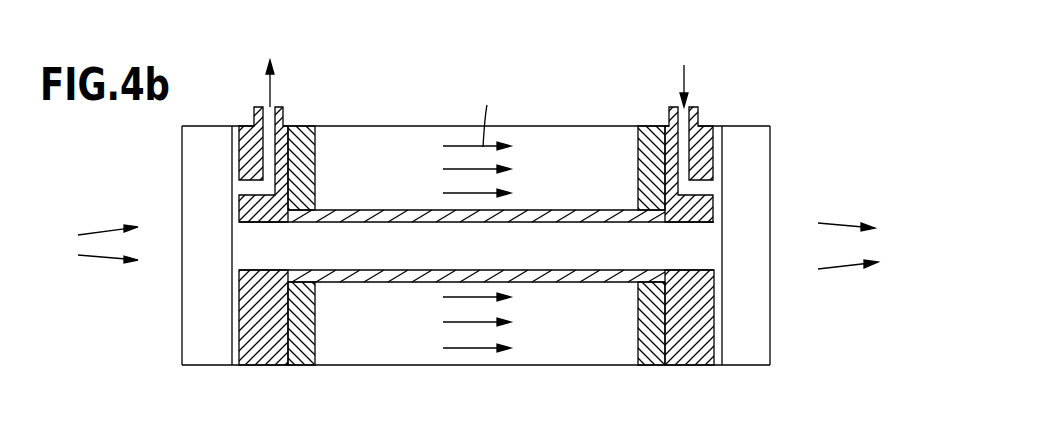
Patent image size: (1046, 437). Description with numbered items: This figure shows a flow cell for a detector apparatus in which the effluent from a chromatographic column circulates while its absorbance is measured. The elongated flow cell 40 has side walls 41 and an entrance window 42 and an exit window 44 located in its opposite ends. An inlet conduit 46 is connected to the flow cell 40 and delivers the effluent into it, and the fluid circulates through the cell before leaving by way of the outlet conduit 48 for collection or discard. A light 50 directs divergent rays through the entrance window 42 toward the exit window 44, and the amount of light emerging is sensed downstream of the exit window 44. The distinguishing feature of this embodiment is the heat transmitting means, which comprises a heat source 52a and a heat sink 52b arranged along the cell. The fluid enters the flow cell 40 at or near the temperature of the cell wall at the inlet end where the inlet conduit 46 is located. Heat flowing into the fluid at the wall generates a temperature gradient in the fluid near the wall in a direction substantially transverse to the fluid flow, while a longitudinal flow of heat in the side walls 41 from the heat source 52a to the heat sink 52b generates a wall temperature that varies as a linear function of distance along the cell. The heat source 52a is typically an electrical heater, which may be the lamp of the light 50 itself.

The flow cell 40 is at (476, 200).
The side walls 41 is at (565, 223).
The entrance window 42 is at (210, 352).
The exit window 44 is at (757, 350).
The inlet conduit 46 is at (689, 107).
The outlet conduit 48 is at (272, 107).
The light 50 is at (97, 232).
The heat source 52a is at (306, 386).
The heat sink 52b is at (653, 386).